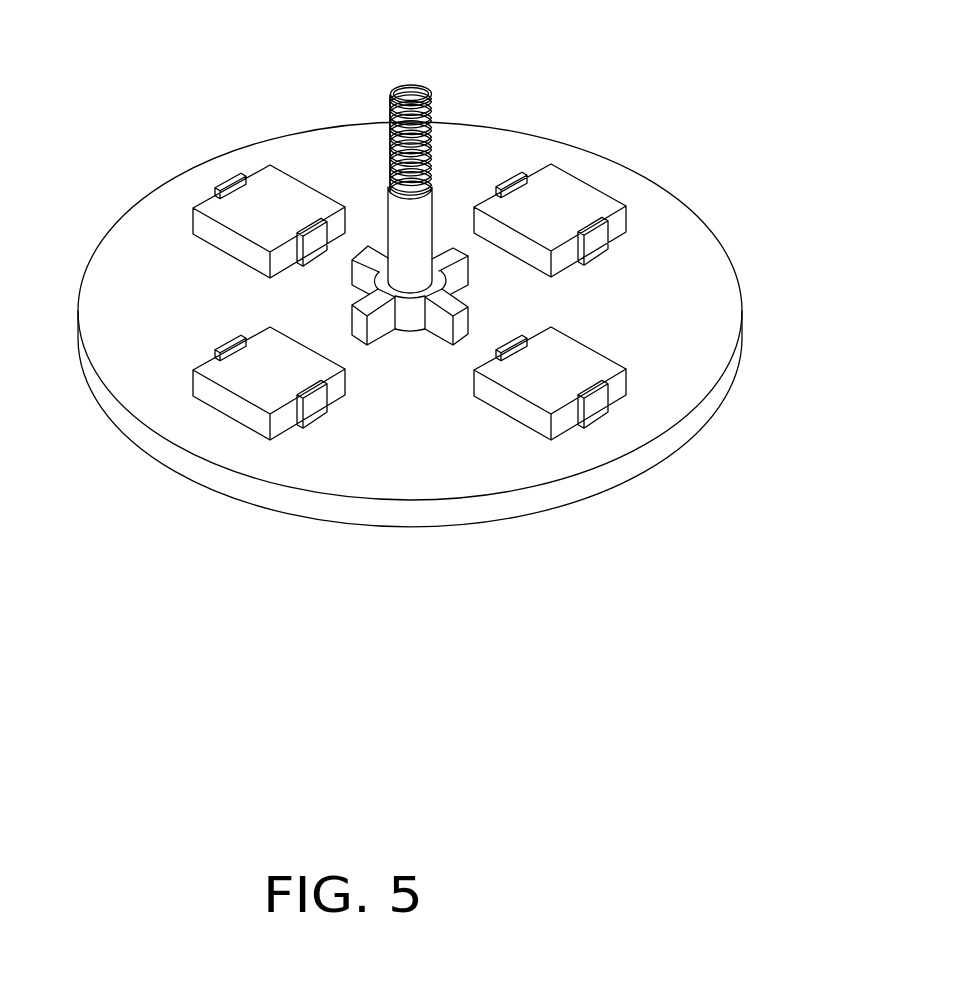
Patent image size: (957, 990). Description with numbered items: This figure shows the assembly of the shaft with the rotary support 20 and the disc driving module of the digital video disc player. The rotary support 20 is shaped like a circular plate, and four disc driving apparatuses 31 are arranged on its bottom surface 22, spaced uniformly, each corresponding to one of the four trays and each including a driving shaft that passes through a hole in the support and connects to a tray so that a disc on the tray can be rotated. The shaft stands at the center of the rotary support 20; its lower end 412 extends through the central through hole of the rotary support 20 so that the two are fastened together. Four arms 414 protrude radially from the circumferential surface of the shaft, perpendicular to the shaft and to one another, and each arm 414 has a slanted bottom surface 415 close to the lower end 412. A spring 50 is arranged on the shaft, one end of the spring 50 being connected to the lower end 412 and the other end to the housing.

The rotary support 20 is at (443, 324).
The bottom surface 22 is at (658, 222).
The disc driving apparatus 31 is at (540, 380).
The spring 50 is at (415, 85).
The lower end 412 is at (433, 188).
The arm 414 is at (256, 427).
The slanted bottom surface 415 is at (372, 303).